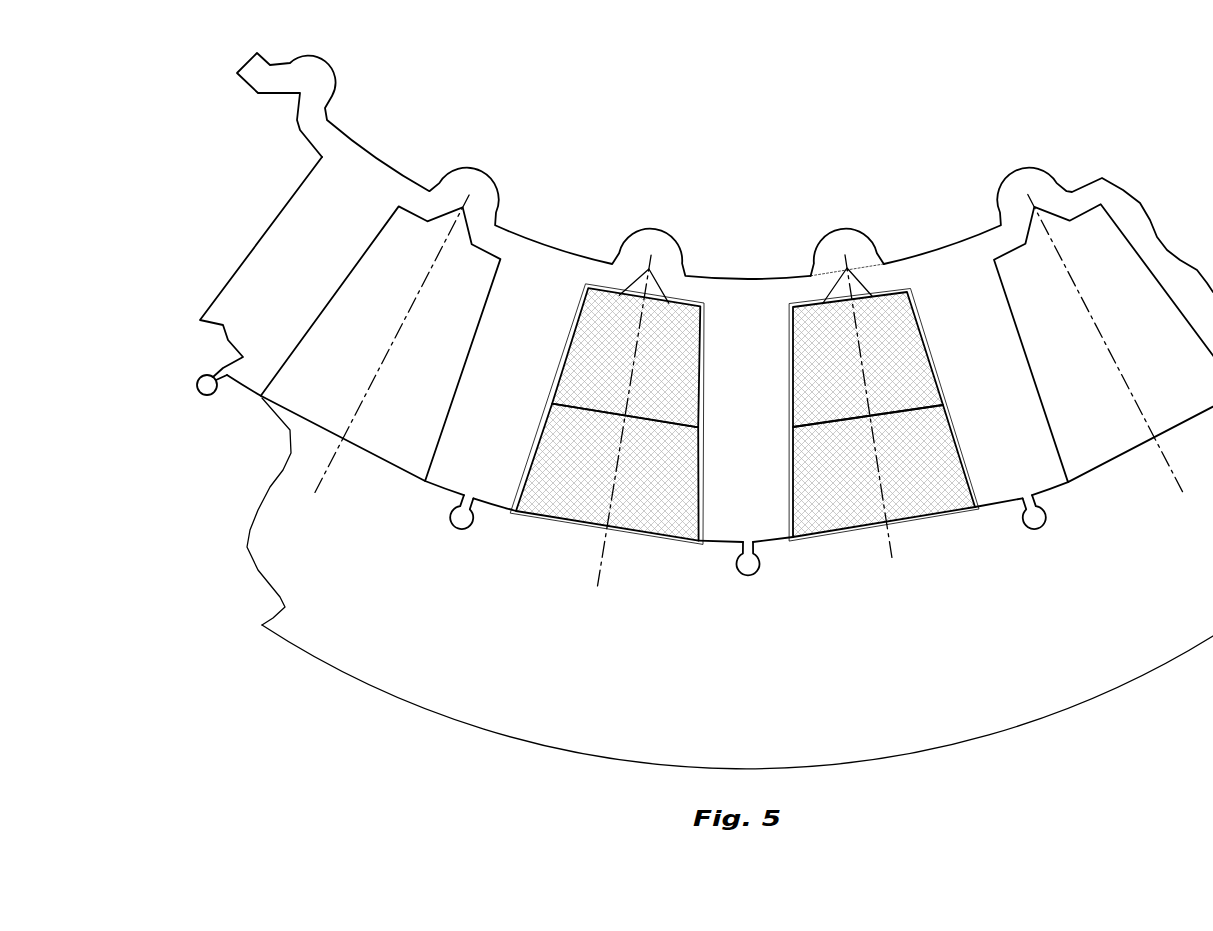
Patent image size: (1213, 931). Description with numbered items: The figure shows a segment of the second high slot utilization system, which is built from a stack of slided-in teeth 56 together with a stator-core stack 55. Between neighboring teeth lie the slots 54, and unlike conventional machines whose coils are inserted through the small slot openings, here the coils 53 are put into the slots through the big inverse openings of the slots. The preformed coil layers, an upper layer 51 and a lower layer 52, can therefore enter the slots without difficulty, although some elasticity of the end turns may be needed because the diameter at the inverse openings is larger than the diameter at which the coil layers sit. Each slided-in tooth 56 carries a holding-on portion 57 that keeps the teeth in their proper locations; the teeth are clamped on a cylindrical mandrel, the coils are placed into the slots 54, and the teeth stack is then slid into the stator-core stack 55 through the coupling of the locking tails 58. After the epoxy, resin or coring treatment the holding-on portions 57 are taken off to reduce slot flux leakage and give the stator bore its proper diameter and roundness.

The upper layer 51 is at (668, 390).
The lower layer 52 is at (657, 488).
The coils 53 is at (885, 404).
The slots 54 is at (1090, 450).
The stator-core stack 55 is at (1117, 611).
The slided-in teeth 56 is at (296, 288).
The holding-on portion 57 is at (845, 243).
The locking tail 58 is at (749, 567).